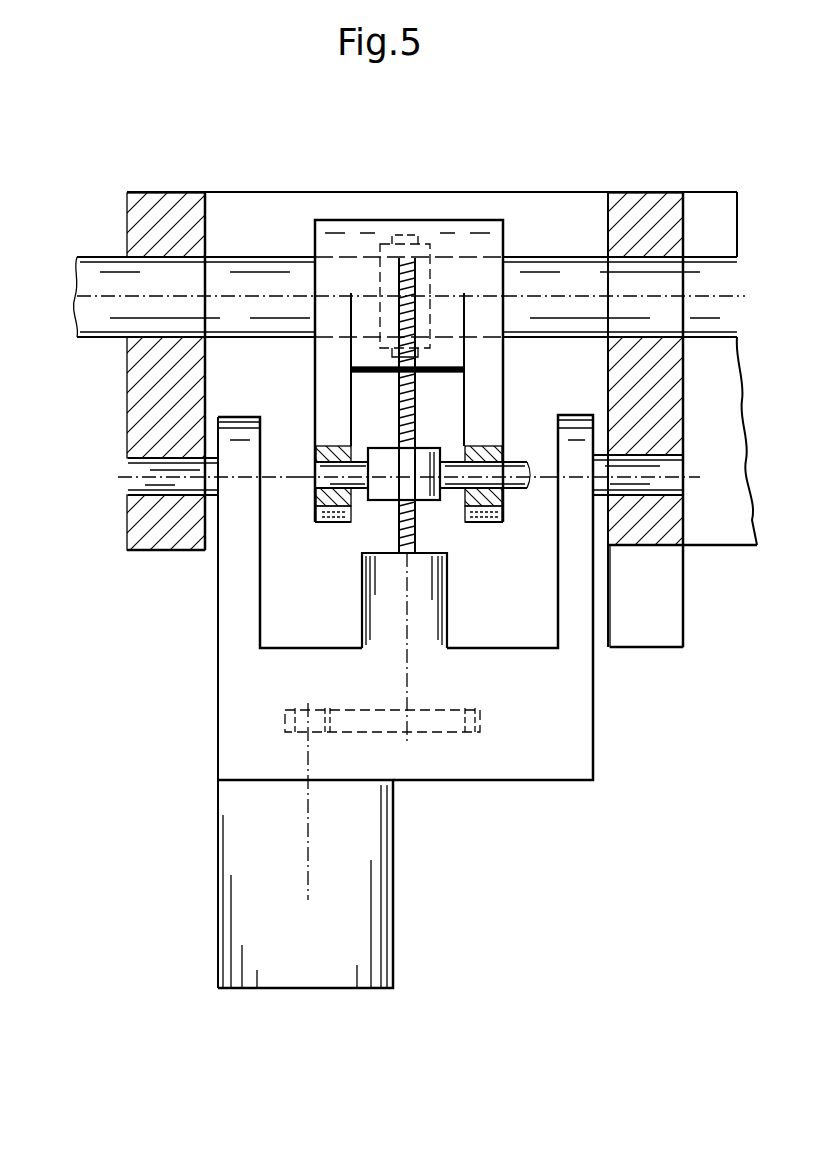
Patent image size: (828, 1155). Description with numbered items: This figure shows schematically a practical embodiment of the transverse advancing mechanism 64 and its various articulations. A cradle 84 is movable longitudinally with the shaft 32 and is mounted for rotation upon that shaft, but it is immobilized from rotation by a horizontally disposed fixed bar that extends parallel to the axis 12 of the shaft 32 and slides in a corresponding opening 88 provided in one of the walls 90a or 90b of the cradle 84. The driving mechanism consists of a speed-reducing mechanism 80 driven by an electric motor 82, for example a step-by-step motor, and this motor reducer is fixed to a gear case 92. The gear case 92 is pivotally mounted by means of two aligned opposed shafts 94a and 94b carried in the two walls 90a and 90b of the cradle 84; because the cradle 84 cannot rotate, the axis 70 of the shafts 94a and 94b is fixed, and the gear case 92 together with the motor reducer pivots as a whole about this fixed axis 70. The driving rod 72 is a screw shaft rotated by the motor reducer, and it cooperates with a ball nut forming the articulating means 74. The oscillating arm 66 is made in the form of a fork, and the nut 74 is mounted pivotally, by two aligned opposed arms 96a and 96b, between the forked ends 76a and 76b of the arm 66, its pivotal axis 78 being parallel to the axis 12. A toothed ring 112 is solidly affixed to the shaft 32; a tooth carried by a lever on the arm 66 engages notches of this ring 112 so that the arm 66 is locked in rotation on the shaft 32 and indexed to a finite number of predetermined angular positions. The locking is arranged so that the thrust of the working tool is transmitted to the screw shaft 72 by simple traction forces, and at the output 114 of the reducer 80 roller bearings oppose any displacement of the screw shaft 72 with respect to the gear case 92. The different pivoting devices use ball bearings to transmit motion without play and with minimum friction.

The axis 12 is at (565, 292).
The shaft 32 is at (235, 272).
The transverse advancing mechanism 64 is at (214, 674).
The oscillating arm 66 is at (468, 233).
The fixed axis 70 is at (246, 440).
The driving rod 72 is at (414, 400).
The articulating means 74 is at (422, 497).
The forked end 76a is at (500, 523).
The forked end 76b is at (325, 523).
The pivotal axis 78 is at (388, 478).
The speed-reducing mechanism 80 is at (481, 722).
The electric motor 82 is at (382, 894).
The cradle 84 is at (300, 200).
The opening 88 is at (651, 548).
The wall 90a is at (645, 198).
The wall 90b is at (166, 203).
The gear case 92 is at (236, 602).
The shaft 94a is at (656, 465).
The shaft 94b is at (132, 492).
The arm 96a is at (514, 468).
The arm 96b is at (320, 465).
The toothed ring 112 is at (385, 248).
The output 114 is at (437, 599).